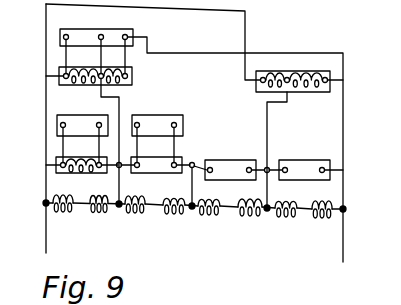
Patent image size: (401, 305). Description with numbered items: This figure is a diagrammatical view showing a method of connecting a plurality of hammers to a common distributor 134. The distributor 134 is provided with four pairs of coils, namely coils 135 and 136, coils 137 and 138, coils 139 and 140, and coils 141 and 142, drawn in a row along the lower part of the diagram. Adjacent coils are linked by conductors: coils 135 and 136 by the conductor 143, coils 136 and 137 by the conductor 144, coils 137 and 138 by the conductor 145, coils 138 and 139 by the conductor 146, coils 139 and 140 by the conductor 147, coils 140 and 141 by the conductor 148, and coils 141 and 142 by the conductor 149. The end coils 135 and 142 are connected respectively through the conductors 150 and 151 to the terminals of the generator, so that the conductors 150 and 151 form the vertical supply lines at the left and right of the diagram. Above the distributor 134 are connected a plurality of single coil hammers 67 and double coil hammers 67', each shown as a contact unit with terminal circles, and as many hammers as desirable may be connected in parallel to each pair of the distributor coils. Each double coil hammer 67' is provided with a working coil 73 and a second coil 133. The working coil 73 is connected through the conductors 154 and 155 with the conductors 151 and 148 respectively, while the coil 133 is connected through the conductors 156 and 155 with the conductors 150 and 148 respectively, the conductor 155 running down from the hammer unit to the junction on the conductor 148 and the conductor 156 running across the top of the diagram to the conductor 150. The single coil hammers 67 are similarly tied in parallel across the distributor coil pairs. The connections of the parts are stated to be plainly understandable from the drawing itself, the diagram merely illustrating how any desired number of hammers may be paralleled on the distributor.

The single coil hammer 67 is at (195, 153).
The double coil hammer 67' is at (215, 108).
The working coil 73 is at (76, 70).
The coil 133 is at (113, 70).
The distributor 134 is at (234, 212).
The coil 135 is at (60, 215).
The coil 136 is at (99, 216).
The coil 137 is at (136, 216).
The coil 138 is at (172, 217).
The coil 139 is at (208, 217).
The coil 140 is at (248, 217).
The coil 141 is at (286, 218).
The coil 142 is at (320, 218).
The conductor 143 is at (82, 202).
The conductor 144 is at (119, 208).
The conductor 145 is at (156, 204).
The conductor 146 is at (192, 210).
The conductor 147 is at (229, 207).
The conductor 148 is at (266, 212).
The conductor 149 is at (305, 208).
The conductor 150 is at (46, 240).
The conductor 151 is at (343, 230).
The conductor 154 is at (343, 111).
The conductor 155 is at (268, 125).
The conductor 156 is at (245, 31).